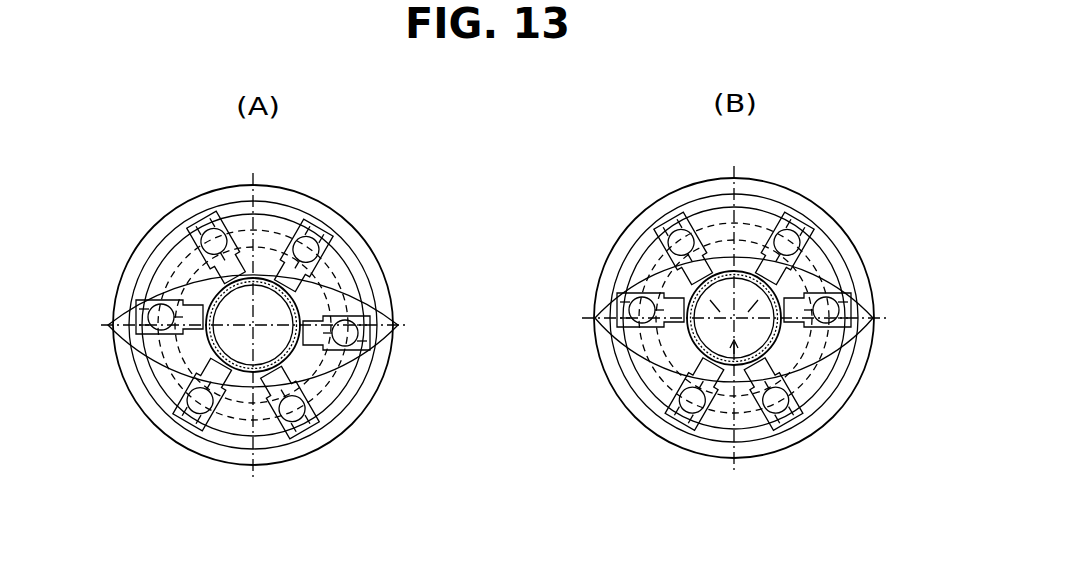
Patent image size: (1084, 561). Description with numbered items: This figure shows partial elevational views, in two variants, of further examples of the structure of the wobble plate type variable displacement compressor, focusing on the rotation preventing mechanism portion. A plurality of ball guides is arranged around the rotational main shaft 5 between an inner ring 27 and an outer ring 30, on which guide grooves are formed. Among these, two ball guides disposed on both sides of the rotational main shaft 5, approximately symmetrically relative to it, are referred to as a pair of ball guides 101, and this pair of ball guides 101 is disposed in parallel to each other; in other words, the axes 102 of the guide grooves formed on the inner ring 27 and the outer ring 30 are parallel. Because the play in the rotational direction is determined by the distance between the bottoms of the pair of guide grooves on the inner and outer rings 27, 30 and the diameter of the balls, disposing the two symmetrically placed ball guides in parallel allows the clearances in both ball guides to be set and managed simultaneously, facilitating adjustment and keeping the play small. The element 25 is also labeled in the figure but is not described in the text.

The rotational main shaft 5 is at (229, 345).
The gripping jaw 25 is at (307, 423).
The inner ring 27 is at (323, 382).
The outer ring 30 is at (333, 293).
The pair of ball guides 101 is at (382, 350).
The axes of guide grooves 102 is at (322, 330).